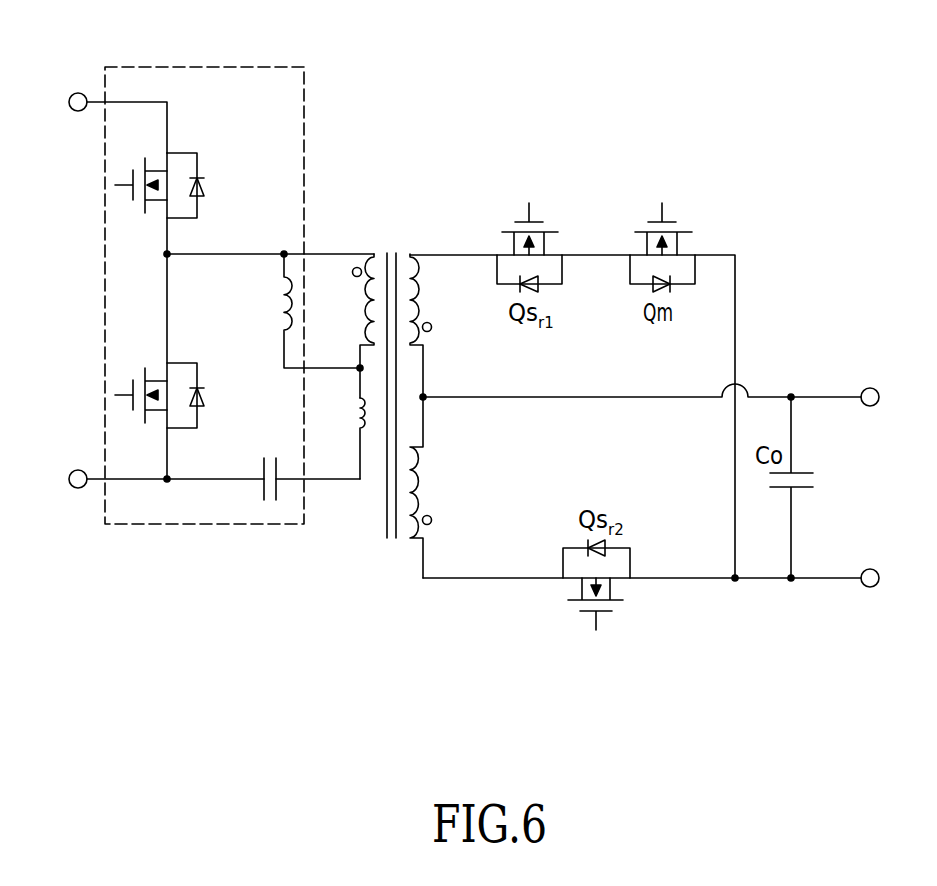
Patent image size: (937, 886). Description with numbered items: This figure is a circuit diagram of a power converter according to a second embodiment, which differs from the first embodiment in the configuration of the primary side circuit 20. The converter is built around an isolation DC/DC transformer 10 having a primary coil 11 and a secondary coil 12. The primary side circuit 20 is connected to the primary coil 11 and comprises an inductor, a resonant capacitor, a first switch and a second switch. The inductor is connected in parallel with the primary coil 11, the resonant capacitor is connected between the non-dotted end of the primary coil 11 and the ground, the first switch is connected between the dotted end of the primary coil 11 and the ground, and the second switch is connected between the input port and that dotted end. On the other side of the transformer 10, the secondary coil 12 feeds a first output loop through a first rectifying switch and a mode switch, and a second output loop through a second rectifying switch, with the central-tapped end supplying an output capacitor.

The isolation DC/DC transformer 10 is at (402, 206).
The primary coil 11 is at (374, 254).
The secondary coil 12 is at (411, 255).
The primary side circuit 20 is at (185, 67).